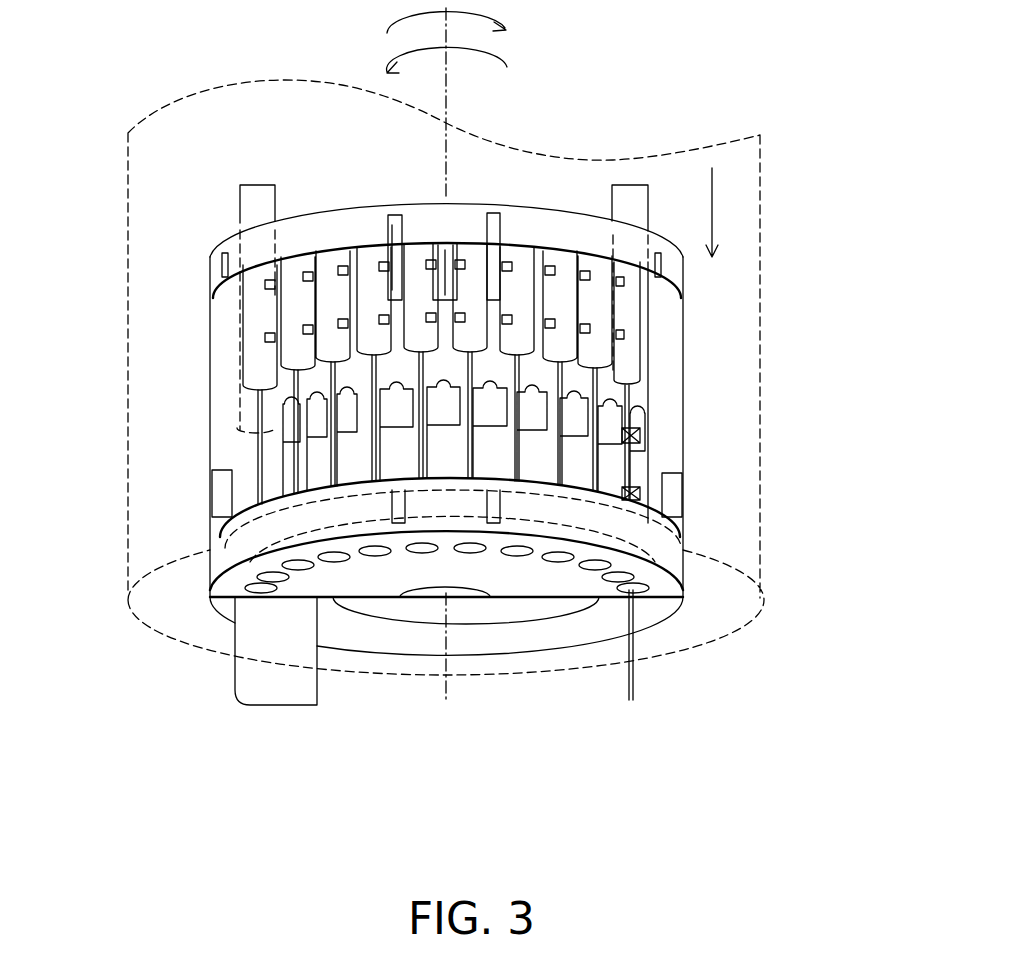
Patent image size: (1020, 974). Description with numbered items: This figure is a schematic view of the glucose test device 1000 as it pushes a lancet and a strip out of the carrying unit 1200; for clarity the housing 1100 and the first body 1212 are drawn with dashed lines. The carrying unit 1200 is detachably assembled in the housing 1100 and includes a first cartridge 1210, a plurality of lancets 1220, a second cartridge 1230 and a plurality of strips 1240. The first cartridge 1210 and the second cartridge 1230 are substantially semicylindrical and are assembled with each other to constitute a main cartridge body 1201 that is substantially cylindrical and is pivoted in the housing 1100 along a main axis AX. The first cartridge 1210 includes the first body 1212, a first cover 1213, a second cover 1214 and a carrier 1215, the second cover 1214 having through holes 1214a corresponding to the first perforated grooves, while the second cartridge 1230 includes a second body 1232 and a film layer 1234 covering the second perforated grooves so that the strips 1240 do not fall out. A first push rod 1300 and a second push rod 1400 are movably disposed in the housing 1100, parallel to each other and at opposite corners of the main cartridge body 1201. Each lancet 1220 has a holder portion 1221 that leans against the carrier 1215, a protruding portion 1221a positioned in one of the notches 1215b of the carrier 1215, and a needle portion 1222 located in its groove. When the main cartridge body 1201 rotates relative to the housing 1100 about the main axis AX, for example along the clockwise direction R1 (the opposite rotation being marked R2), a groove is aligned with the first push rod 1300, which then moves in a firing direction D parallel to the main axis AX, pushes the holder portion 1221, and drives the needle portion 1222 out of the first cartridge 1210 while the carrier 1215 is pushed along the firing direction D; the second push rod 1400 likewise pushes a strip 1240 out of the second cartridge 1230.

The glucose test device 1000 is at (760, 845).
The housing 1100 is at (695, 645).
The carrying unit 1200 is at (716, 424).
The main cartridge body 1201 is at (565, 797).
The first cartridge 1210 is at (510, 592).
The first body 1212 is at (392, 212).
The first cover 1213 is at (673, 270).
The second cover 1214 is at (222, 563).
The through holes 1214a is at (617, 604).
The carrier 1215 is at (315, 465).
The notches 1215b is at (586, 437).
The lancets 1220 is at (566, 262).
The holder portion 1221 is at (643, 478).
The protruding portion 1221a is at (600, 330).
The needle portion 1222 is at (698, 613).
The second cartridge 1230 is at (330, 700).
The second body 1232 is at (218, 355).
The film layer 1234 is at (378, 633).
The strips 1240 is at (253, 683).
The first push rod 1300 is at (632, 200).
The second push rod 1400 is at (262, 200).
The main axis AX is at (449, 373).
The clockwise direction R1 is at (461, 27).
The rotation direction R2 is at (461, 68).
The firing direction D is at (723, 212).